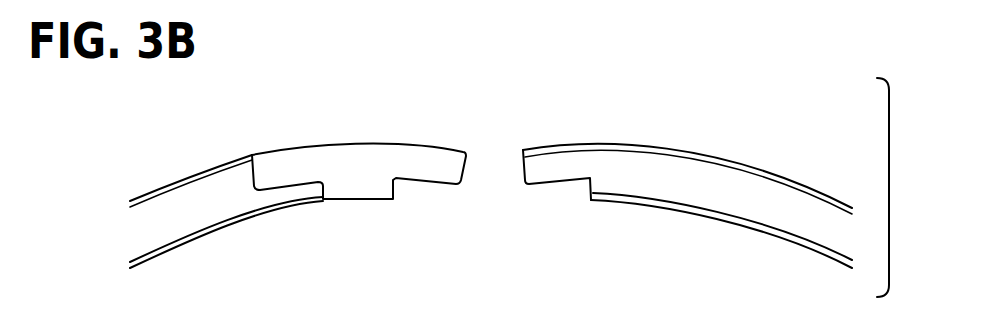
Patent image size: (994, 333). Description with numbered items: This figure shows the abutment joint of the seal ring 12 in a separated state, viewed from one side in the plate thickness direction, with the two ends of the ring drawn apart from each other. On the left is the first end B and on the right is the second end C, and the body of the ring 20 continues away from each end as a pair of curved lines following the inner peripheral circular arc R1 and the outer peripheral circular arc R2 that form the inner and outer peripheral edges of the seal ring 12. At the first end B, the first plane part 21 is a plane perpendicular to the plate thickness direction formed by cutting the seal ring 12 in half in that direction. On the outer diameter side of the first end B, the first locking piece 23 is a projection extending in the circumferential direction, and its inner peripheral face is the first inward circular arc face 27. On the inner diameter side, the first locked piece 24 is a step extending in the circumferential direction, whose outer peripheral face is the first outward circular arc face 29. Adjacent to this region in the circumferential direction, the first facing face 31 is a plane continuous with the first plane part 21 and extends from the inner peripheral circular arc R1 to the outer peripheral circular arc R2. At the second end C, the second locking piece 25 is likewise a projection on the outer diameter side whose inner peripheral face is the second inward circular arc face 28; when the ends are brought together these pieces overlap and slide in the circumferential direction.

The seal ring 12 is at (902, 187).
The ring main body 20 is at (807, 213).
The first plane part 21 is at (273, 168).
The first locking piece 23 is at (425, 163).
The first locked piece 24 is at (293, 192).
The second locking piece 25 is at (547, 165).
The first inward circular arc face 27 is at (422, 183).
The second inward circular arc face 28 is at (558, 185).
The first outward circular arc face 29 is at (300, 177).
The first facing face 31 is at (345, 172).
The inner peripheral circular arc R1 is at (367, 202).
The outer peripheral circular arc R2 is at (367, 143).
The first end B is at (210, 150).
The second end C is at (788, 163).